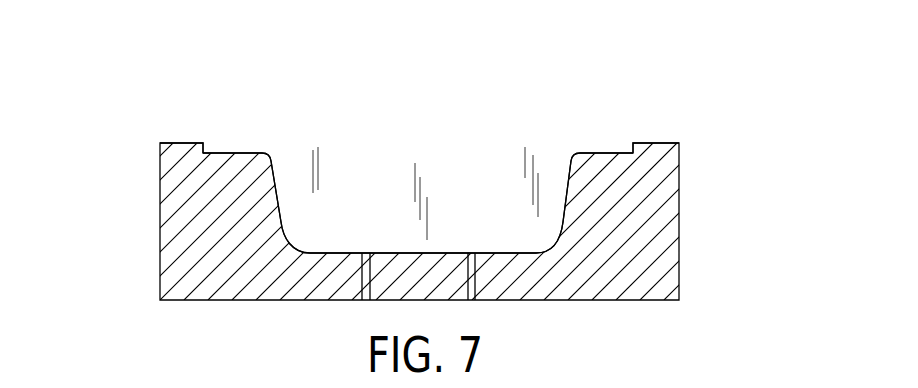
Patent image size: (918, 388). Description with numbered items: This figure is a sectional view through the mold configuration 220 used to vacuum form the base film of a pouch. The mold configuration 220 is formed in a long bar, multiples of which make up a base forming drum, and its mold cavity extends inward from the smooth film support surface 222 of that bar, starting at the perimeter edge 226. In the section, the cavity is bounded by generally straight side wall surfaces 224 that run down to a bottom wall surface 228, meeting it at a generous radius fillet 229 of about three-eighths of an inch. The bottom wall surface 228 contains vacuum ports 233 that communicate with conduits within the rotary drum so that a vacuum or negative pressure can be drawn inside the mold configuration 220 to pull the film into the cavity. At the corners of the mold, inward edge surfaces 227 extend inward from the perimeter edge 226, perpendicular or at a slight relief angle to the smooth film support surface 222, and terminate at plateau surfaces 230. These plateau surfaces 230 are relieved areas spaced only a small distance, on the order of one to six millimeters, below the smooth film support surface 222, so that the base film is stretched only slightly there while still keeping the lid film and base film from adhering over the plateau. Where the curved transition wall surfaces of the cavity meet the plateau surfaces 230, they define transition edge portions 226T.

The mold configuration 220 is at (408, 118).
The smooth film support surface 222 is at (183, 143).
The side wall surfaces 224 is at (277, 197).
The perimeter edge 226 is at (443, 128).
The transition edge portions 226T is at (268, 159).
The inward edge surfaces 227 is at (213, 152).
The bottom wall surface 228 is at (402, 253).
The radius fillet 229 is at (283, 240).
The plateau surfaces 230 is at (203, 152).
The vacuum ports 233 is at (364, 262).